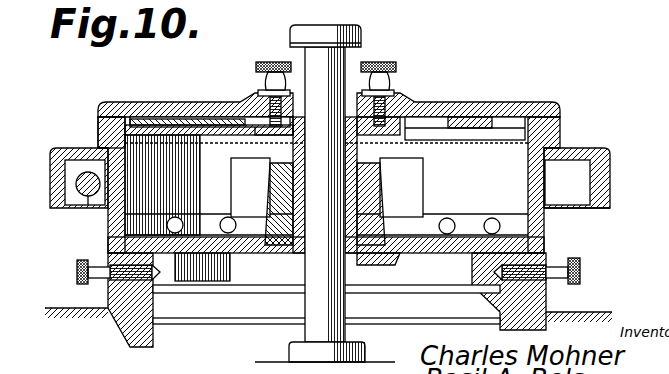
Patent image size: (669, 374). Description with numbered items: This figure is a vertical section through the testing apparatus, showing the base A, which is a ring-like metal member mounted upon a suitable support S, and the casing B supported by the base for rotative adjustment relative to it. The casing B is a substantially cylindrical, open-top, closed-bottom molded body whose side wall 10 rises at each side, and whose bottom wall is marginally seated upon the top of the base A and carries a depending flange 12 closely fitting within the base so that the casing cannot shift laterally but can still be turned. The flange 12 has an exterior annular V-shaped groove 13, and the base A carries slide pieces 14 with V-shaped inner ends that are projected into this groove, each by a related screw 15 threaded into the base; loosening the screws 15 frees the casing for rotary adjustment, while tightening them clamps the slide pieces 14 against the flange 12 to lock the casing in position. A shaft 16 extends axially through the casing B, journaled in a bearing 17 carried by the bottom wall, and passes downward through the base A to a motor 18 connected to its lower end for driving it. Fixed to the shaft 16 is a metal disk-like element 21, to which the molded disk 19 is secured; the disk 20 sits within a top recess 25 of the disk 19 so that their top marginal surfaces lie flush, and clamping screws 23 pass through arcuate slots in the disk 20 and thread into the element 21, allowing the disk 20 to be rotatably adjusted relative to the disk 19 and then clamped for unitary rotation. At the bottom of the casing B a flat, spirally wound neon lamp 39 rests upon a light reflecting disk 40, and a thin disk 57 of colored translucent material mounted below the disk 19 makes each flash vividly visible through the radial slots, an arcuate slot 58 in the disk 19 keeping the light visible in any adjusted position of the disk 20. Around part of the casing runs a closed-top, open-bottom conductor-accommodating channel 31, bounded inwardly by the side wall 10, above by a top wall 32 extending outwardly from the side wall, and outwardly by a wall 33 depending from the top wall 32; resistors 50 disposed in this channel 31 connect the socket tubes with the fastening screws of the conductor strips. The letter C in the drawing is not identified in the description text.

The side wall 10 is at (546, 226).
The depending flange 12 is at (211, 269).
The annular V-shaped groove 13 is at (480, 270).
The slide pieces 14 is at (110, 246).
The screw 15 is at (77, 272).
The shaft 16 is at (362, 322).
The bearing 17 is at (273, 198).
The motor 18 is at (286, 362).
The disk 19 is at (140, 102).
The disk 20 is at (456, 104).
The disk-like element 21 is at (393, 146).
The clamping screws 23 is at (266, 64).
The top recess 25 is at (182, 102).
The conductor-accommodating channel 31 is at (68, 172).
The top wall 32 is at (572, 160).
The outer wall 33 is at (603, 210).
The lamp 39 is at (458, 216).
The light reflecting disk 40 is at (408, 256).
The resistors 50 is at (78, 190).
The thin disk 57 is at (211, 136).
The arcuate slot 58 is at (495, 117).
The base A is at (130, 300).
The casing B is at (98, 138).
The central shaft C is at (362, 37).
The support S is at (321, 329).